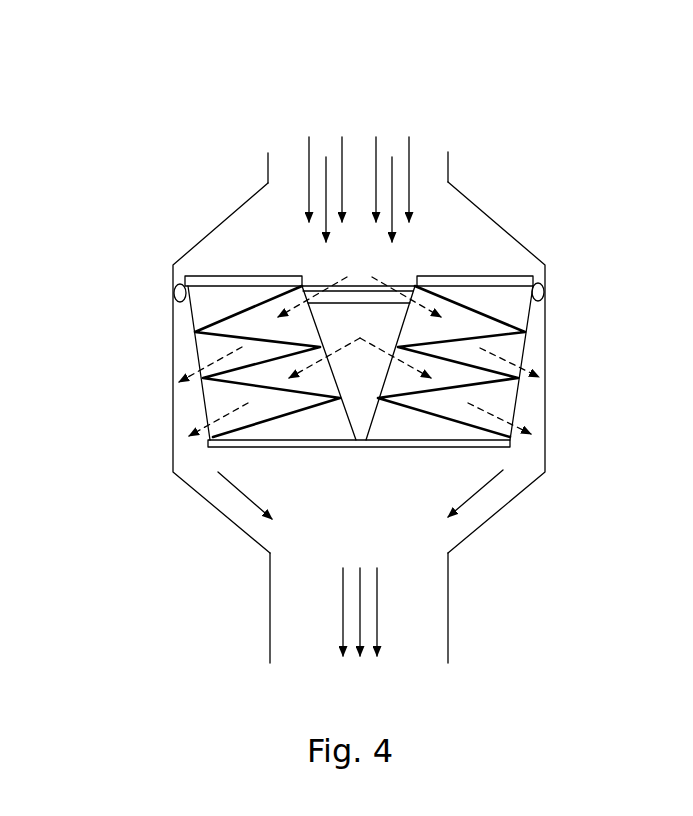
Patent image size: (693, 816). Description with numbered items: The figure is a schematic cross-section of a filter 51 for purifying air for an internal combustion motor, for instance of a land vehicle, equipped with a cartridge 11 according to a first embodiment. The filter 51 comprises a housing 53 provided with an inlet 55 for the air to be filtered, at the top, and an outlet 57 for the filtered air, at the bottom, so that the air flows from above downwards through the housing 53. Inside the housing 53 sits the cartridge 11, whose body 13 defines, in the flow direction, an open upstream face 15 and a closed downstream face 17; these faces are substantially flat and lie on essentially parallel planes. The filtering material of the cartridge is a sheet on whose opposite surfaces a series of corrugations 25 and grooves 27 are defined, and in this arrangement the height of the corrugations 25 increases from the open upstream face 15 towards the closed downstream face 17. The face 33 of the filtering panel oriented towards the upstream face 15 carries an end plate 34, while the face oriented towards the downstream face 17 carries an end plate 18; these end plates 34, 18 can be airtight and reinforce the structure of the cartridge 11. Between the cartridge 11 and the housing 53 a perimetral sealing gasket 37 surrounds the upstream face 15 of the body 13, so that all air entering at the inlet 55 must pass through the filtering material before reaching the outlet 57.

The cartridge 11 is at (221, 275).
The body 13 is at (529, 351).
The upstream face 15 is at (452, 283).
The downstream face 17 is at (260, 452).
The end plate 18 is at (470, 448).
The corrugations 25 is at (213, 318).
The grooves 27 is at (230, 388).
The face of panel 33 is at (217, 275).
The end plate 34 is at (242, 262).
The perimetral sealing gasket 37 is at (545, 292).
The filter 51 is at (188, 609).
The housing 53 is at (170, 386).
The inlet 55 is at (268, 276).
The outlet 57 is at (448, 608).